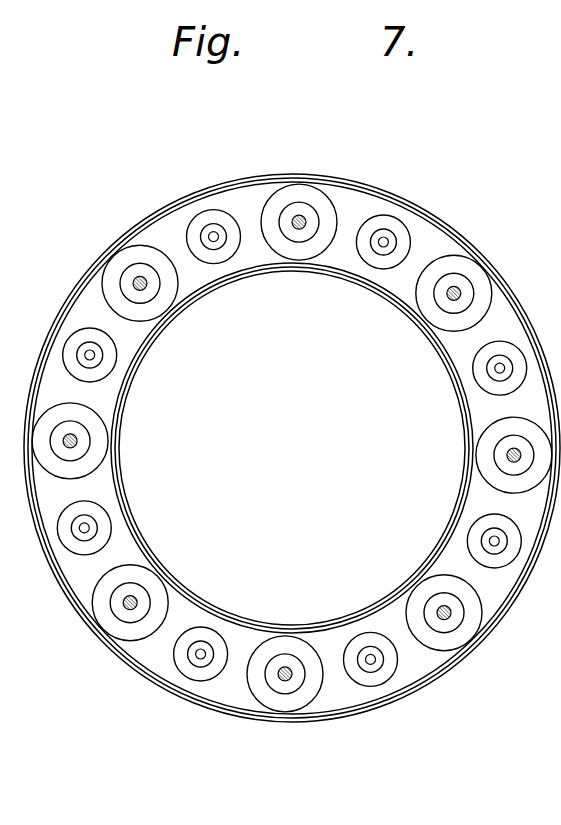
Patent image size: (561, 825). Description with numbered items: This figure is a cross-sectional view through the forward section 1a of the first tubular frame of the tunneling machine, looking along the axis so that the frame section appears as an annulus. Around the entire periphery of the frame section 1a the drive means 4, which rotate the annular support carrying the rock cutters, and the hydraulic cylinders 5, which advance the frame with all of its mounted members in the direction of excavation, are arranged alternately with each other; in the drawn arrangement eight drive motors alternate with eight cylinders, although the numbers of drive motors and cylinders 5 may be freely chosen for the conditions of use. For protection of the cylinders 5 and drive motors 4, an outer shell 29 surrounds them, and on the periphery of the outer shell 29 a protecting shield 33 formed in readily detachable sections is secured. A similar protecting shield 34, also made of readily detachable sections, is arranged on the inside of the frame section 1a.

The forward section of the first frame 1a is at (263, 265).
The drive means 4 is at (116, 348).
The hydraulic cylinders 5 is at (336, 209).
The outer shell 29 is at (240, 708).
The protecting shield 33 is at (470, 660).
The protecting shield 34 is at (320, 268).